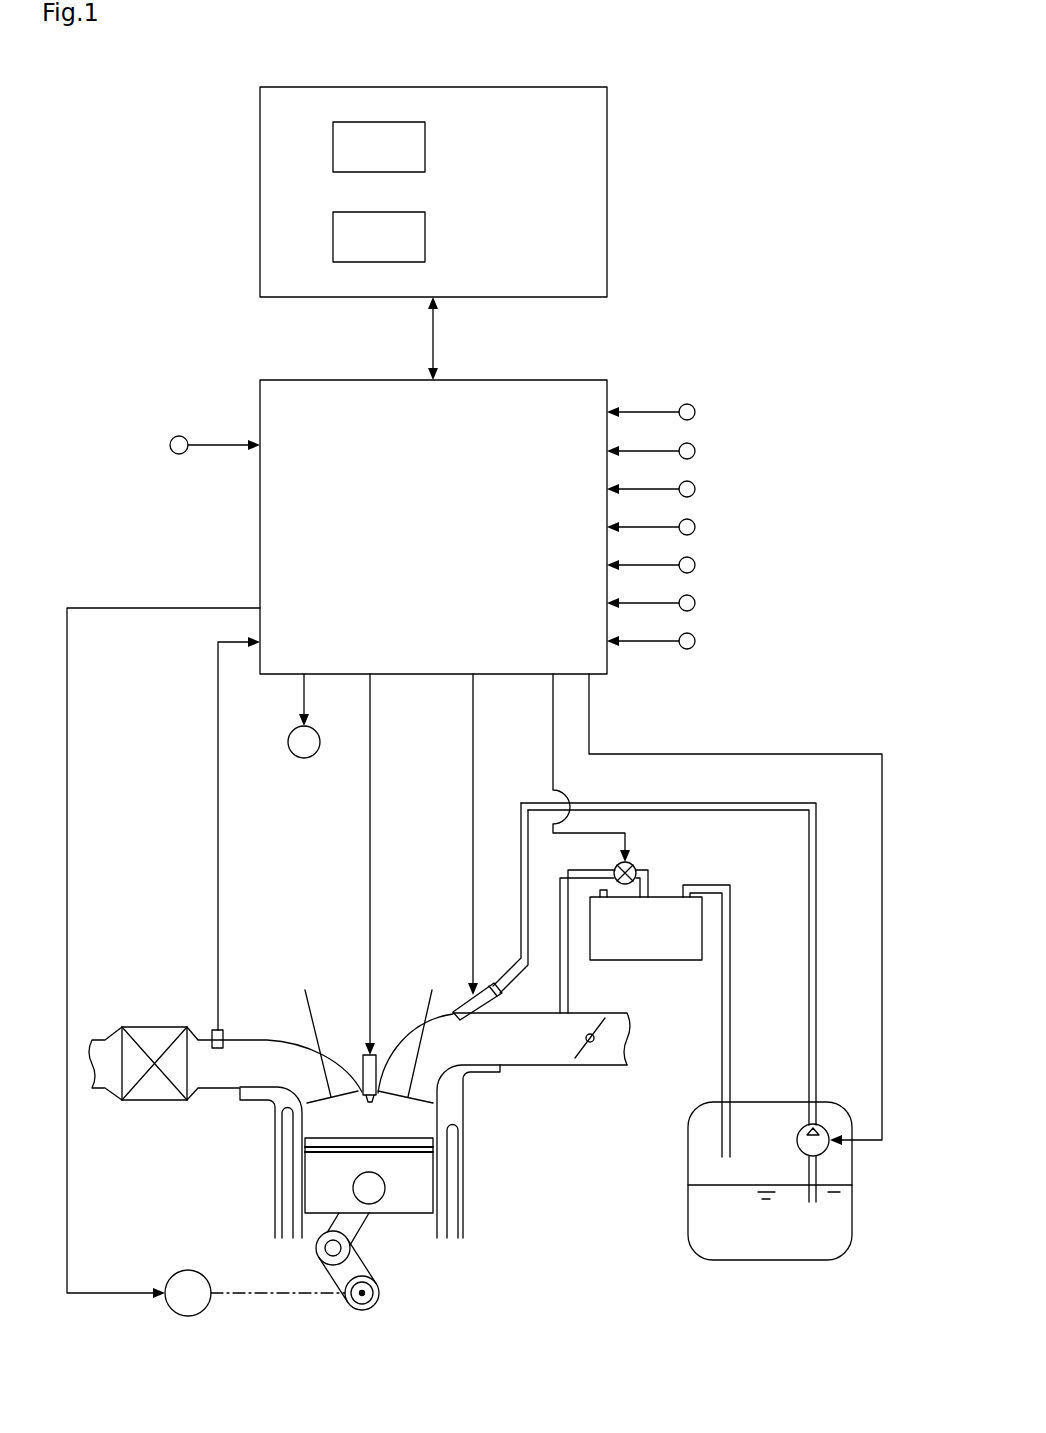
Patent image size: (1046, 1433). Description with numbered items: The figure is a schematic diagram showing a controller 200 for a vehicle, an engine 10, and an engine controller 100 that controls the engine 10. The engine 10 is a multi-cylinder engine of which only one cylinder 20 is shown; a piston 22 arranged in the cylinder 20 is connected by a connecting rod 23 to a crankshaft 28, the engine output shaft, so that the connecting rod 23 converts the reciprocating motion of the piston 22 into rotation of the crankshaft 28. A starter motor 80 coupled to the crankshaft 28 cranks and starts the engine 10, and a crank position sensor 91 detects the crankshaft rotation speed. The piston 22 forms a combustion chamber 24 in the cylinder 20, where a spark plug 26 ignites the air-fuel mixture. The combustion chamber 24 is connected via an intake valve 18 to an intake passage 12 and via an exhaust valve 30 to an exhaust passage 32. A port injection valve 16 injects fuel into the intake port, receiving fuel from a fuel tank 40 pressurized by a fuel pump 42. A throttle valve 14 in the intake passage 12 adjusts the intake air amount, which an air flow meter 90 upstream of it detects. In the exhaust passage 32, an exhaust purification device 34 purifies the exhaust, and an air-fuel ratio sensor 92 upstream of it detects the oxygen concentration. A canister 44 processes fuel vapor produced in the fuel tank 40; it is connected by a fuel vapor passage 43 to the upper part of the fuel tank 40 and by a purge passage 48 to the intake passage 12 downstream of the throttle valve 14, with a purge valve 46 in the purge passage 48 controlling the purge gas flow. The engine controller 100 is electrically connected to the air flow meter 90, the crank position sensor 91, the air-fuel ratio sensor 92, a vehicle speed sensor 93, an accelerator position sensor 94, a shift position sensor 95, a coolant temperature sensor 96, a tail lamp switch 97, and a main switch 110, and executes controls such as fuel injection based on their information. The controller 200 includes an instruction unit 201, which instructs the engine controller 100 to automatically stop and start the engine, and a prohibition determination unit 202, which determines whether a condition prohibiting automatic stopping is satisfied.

The engine 10 is at (398, 935).
The intake passage 12 is at (606, 1068).
The throttle valve 14 is at (304, 758).
The port injection valve 16 is at (495, 981).
The intake valve 18 is at (418, 1056).
The cylinder 20 is at (302, 1130).
The piston 22 is at (425, 1198).
The connecting rod 23 is at (357, 1233).
The combustion chamber 24 is at (423, 1120).
The spark plug 26 is at (362, 1058).
The crankshaft 28 is at (366, 1311).
The exhaust valve 30 is at (308, 1002).
The exhaust passage 32 is at (210, 1091).
The exhaust purification device 34 is at (155, 1029).
The fuel tank 40 is at (823, 1101).
The fuel pump 42 is at (797, 1143).
The fuel vapor passage 43 is at (733, 1001).
The canister 44 is at (670, 961).
The purge valve 46 is at (637, 867).
The purge passage 48 is at (560, 992).
The starter motor 80 is at (190, 1317).
The air flow meter 90 is at (696, 412).
The crank position sensor 91 is at (696, 451).
The air-fuel ratio sensor 92 is at (222, 1030).
The vehicle speed sensor 93 is at (696, 489).
The accelerator position sensor 94 is at (696, 527).
The shift position sensor 95 is at (696, 565).
The coolant temperature sensor 96 is at (696, 603).
The tail lamp switch 97 is at (696, 641).
The engine controller 100 is at (572, 379).
The main switch 110 is at (170, 445).
The controller 200 is at (572, 84).
The instruction unit 201 is at (427, 148).
The prohibition determination unit 202 is at (427, 237).